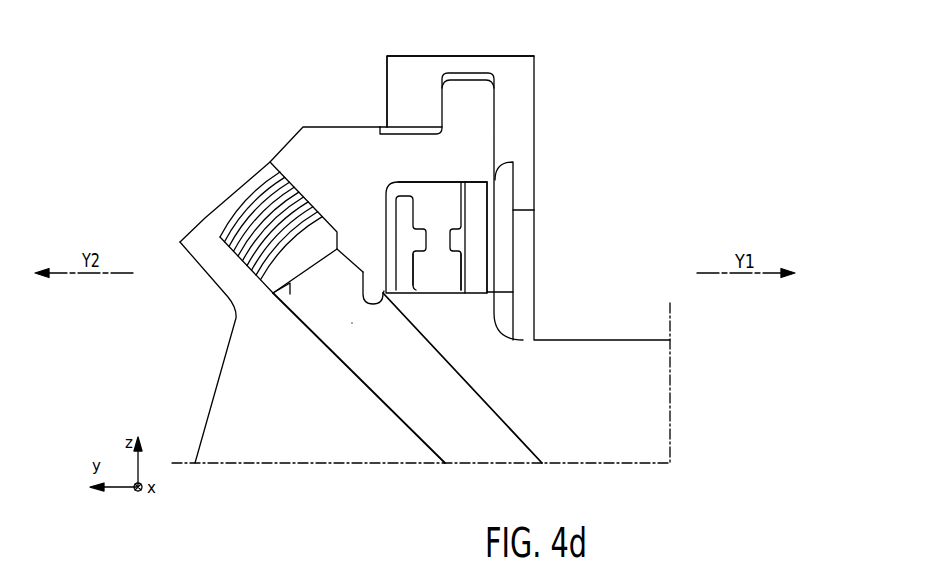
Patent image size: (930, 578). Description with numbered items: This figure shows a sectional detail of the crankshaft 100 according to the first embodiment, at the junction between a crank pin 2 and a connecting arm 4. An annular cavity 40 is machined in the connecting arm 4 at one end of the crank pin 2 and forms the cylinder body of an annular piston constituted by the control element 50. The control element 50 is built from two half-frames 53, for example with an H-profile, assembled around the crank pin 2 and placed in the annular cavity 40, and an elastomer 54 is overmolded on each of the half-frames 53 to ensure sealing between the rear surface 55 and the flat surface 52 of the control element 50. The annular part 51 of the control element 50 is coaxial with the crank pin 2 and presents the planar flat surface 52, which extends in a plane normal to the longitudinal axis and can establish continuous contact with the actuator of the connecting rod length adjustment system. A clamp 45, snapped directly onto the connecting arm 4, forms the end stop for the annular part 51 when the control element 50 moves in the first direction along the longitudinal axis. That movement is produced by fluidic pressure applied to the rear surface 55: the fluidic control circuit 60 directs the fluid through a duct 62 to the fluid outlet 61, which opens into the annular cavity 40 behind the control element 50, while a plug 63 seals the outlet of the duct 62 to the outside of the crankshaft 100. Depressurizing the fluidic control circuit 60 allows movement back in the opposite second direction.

The crankshaft 100 is at (584, 61).
The clamp 45 is at (403, 82).
The annular cavity 40 is at (371, 196).
The connecting arm 4 is at (253, 437).
The control element 50 is at (597, 172).
The annular part 51 is at (477, 257).
The flat surface 52 is at (506, 226).
The half-frames 53 is at (405, 278).
The elastomer 54 is at (445, 203).
The rear surface 55 is at (370, 262).
The crank pin 2 is at (622, 398).
The fluidic control circuit 60 is at (435, 513).
The fluid outlet 61 is at (378, 283).
The duct 62 is at (352, 323).
The plug 63 is at (296, 310).